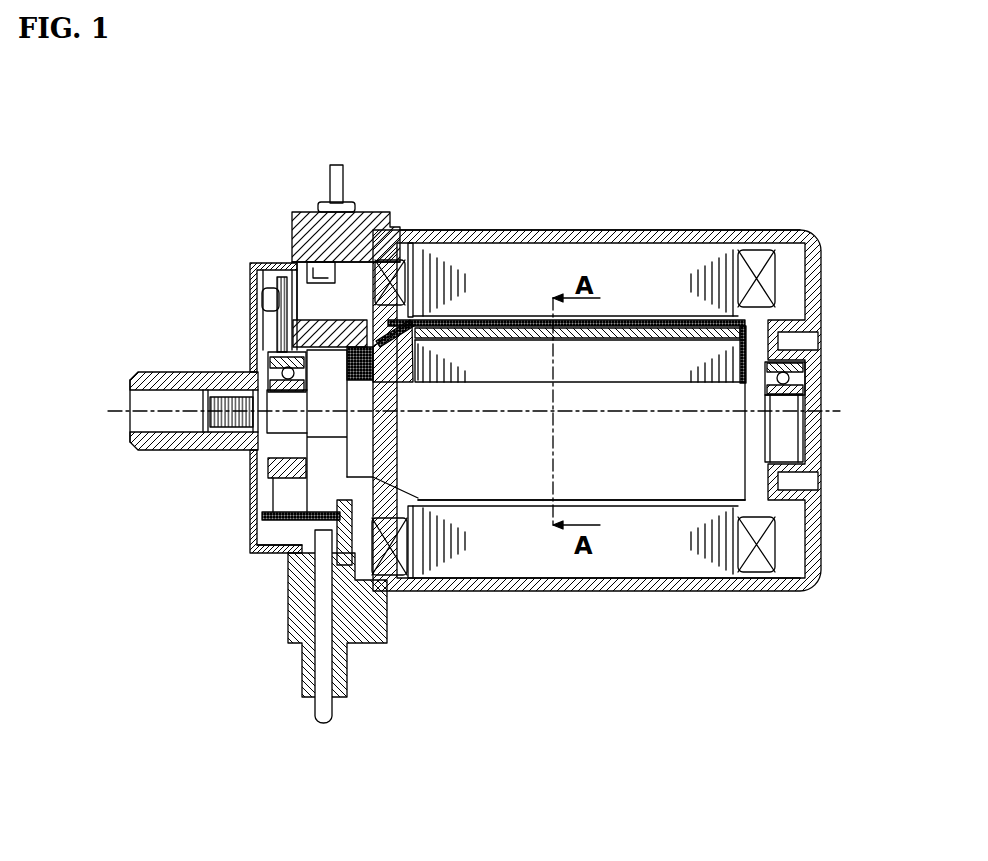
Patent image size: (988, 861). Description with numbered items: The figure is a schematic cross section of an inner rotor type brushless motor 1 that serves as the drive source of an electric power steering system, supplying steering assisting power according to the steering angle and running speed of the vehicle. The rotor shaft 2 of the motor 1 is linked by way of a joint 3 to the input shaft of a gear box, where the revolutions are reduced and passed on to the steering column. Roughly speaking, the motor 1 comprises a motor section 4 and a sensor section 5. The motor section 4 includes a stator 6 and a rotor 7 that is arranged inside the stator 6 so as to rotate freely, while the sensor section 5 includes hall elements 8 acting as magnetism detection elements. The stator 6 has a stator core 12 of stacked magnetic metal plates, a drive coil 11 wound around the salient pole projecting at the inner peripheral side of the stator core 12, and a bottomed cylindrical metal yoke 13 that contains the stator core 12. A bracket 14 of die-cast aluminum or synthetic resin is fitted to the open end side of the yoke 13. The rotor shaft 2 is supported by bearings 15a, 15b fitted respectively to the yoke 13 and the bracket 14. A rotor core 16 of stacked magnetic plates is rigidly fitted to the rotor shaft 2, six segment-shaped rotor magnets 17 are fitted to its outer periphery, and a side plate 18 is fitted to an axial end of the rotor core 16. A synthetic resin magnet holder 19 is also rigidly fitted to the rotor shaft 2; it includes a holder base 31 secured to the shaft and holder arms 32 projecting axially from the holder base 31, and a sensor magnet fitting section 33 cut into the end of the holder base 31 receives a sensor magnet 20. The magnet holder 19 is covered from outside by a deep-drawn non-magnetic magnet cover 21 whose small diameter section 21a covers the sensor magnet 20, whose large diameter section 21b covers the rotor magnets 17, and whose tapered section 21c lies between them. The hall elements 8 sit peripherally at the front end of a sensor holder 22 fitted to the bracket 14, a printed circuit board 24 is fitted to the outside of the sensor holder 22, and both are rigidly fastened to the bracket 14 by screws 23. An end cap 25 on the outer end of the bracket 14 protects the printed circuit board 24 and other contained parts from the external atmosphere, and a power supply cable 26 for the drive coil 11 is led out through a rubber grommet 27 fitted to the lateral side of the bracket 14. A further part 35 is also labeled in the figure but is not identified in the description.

The motor 1 is at (702, 199).
The rotor shaft 2 is at (755, 430).
The joint 3 is at (185, 445).
The motor section 4 is at (596, 226).
The sensor section 5 is at (317, 206).
The stator 6 is at (545, 268).
The rotor 7 is at (657, 482).
The hall elements 8 is at (388, 320).
The drive coil 11 is at (768, 280).
The stator core 12 is at (603, 565).
The yoke 13 is at (790, 236).
The bracket 14 is at (297, 233).
The bearing 15a is at (262, 370).
The bearing 15b is at (789, 378).
The rotor core 16 is at (528, 372).
The rotor magnets 17 is at (660, 342).
The side plate 18 is at (720, 340).
The magnet holder 19 is at (402, 376).
The sensor magnet 20 is at (307, 352).
The magnet cover 21 is at (614, 320).
The small diameter section 21a is at (360, 322).
The large diameter section 21b is at (490, 340).
The tapered section 21c is at (388, 320).
The sensor holder 22 is at (297, 262).
The screws 23 is at (265, 297).
The printed circuit board 24 is at (287, 338).
The end cap 25 is at (252, 512).
The power supply cable 26 is at (330, 710).
The rubber grommet 27 is at (358, 630).
The holder base 31 is at (377, 383).
The holder arms 32 is at (577, 340).
The sensor magnet fitting section 33 is at (360, 370).
The sleeve 35 is at (522, 327).